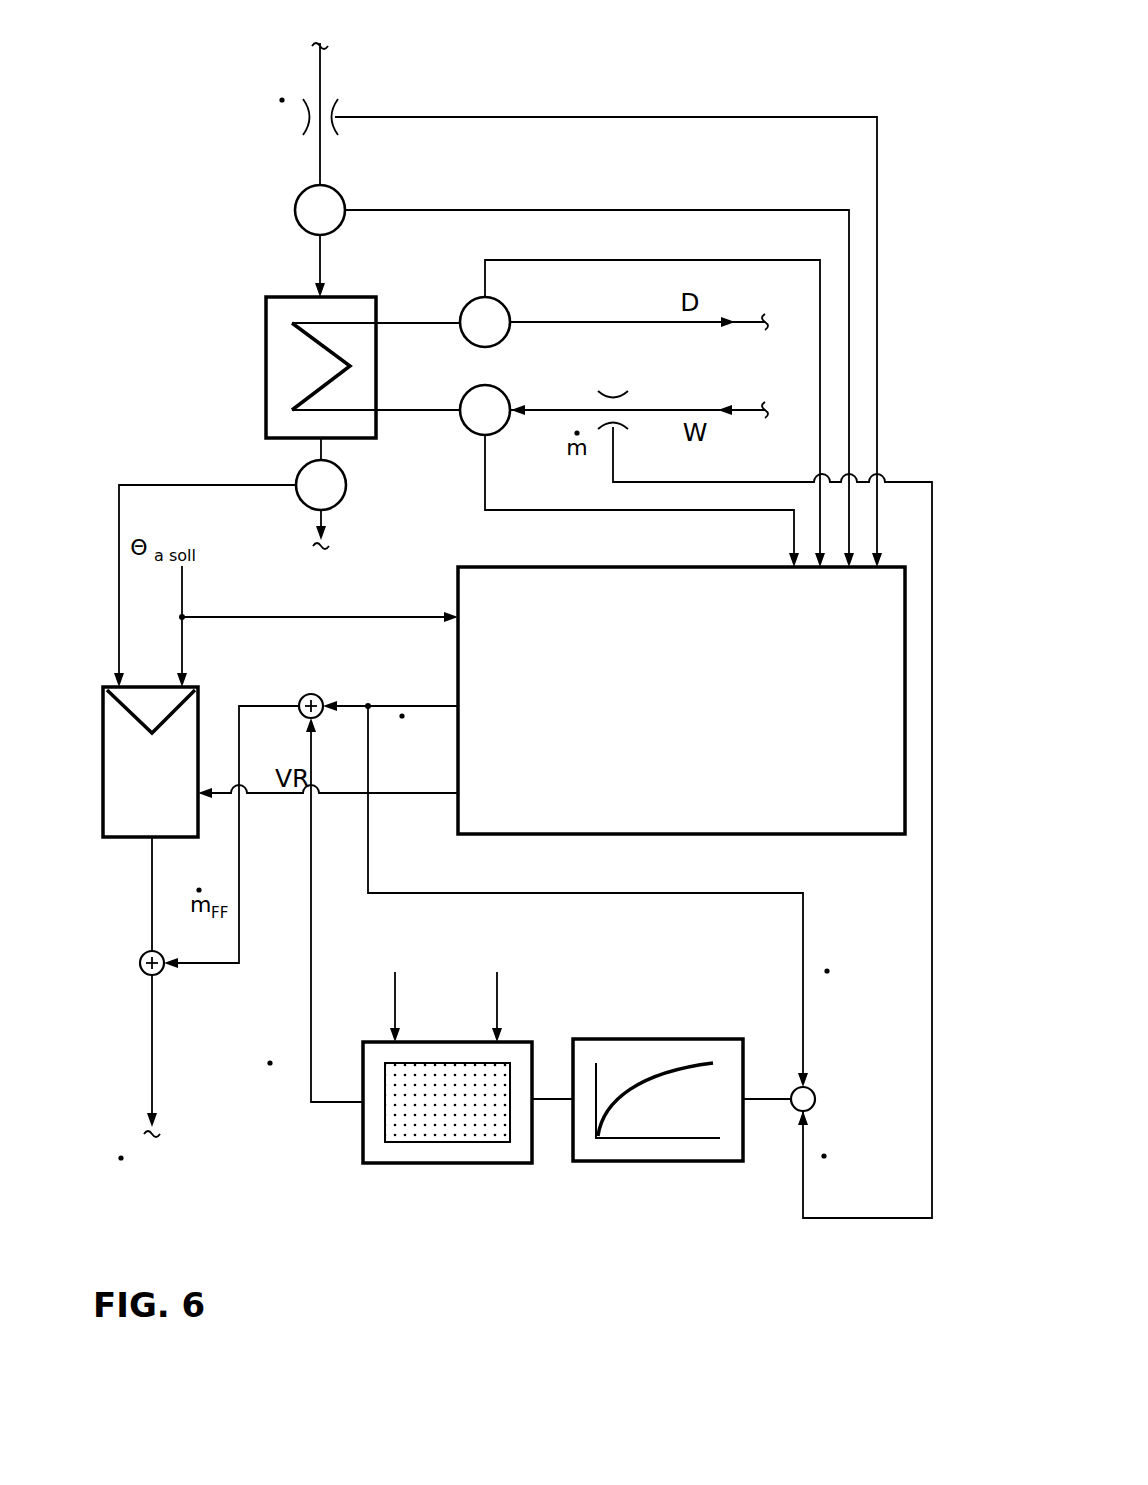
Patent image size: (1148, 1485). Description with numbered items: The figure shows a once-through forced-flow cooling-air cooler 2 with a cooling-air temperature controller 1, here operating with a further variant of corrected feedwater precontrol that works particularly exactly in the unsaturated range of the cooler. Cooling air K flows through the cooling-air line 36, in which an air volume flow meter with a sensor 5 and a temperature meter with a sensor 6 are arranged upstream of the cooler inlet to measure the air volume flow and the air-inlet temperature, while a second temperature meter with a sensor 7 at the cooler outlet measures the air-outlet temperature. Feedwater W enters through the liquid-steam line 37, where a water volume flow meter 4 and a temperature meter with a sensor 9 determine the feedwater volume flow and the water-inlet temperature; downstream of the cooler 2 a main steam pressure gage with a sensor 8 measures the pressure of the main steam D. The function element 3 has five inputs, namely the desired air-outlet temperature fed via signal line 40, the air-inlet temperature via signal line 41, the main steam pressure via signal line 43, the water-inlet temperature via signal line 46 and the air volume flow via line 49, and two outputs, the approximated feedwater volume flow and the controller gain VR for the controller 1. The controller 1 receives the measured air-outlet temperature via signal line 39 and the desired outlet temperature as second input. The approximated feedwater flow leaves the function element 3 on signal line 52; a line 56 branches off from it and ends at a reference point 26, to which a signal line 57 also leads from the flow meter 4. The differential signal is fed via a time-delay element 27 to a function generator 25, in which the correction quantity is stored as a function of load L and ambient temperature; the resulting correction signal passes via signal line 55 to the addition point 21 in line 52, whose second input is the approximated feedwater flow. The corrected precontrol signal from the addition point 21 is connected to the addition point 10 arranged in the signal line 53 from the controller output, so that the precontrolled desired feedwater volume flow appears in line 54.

The cooling-air temperature controller 1 is at (150, 762).
The once-through forced-flow cooling-air cooler 2 is at (293, 343).
The function element 3 is at (679, 721).
The water volume flow meter 4 is at (613, 388).
The air volume flow meter sensor 5 is at (337, 111).
The air-inlet temperature sensor 6 is at (296, 216).
The air-outlet temperature sensor 7 is at (298, 472).
The main steam pressure gage sensor 8 is at (508, 313).
The feedwater temperature sensor 9 is at (503, 392).
The addition point 10 is at (140, 963).
The addition point 21 is at (302, 698).
The function generator 25 is at (445, 1163).
The reference point 26 is at (818, 1099).
The time-delay element 27 is at (657, 1161).
The cooling-air line 36 is at (320, 160).
The liquid-steam line 37 is at (437, 410).
The signal line 39 is at (152, 485).
The signal line 40 is at (260, 617).
The signal line 41 is at (715, 210).
The signal line 43 is at (649, 260).
The signal line 46 is at (485, 481).
The line 49 is at (783, 117).
The signal line 52 is at (410, 706).
The signal line 53 is at (152, 898).
The line 54 is at (152, 1048).
The signal line 55 is at (311, 943).
The line 56 is at (657, 893).
The signal line 57 is at (868, 1218).